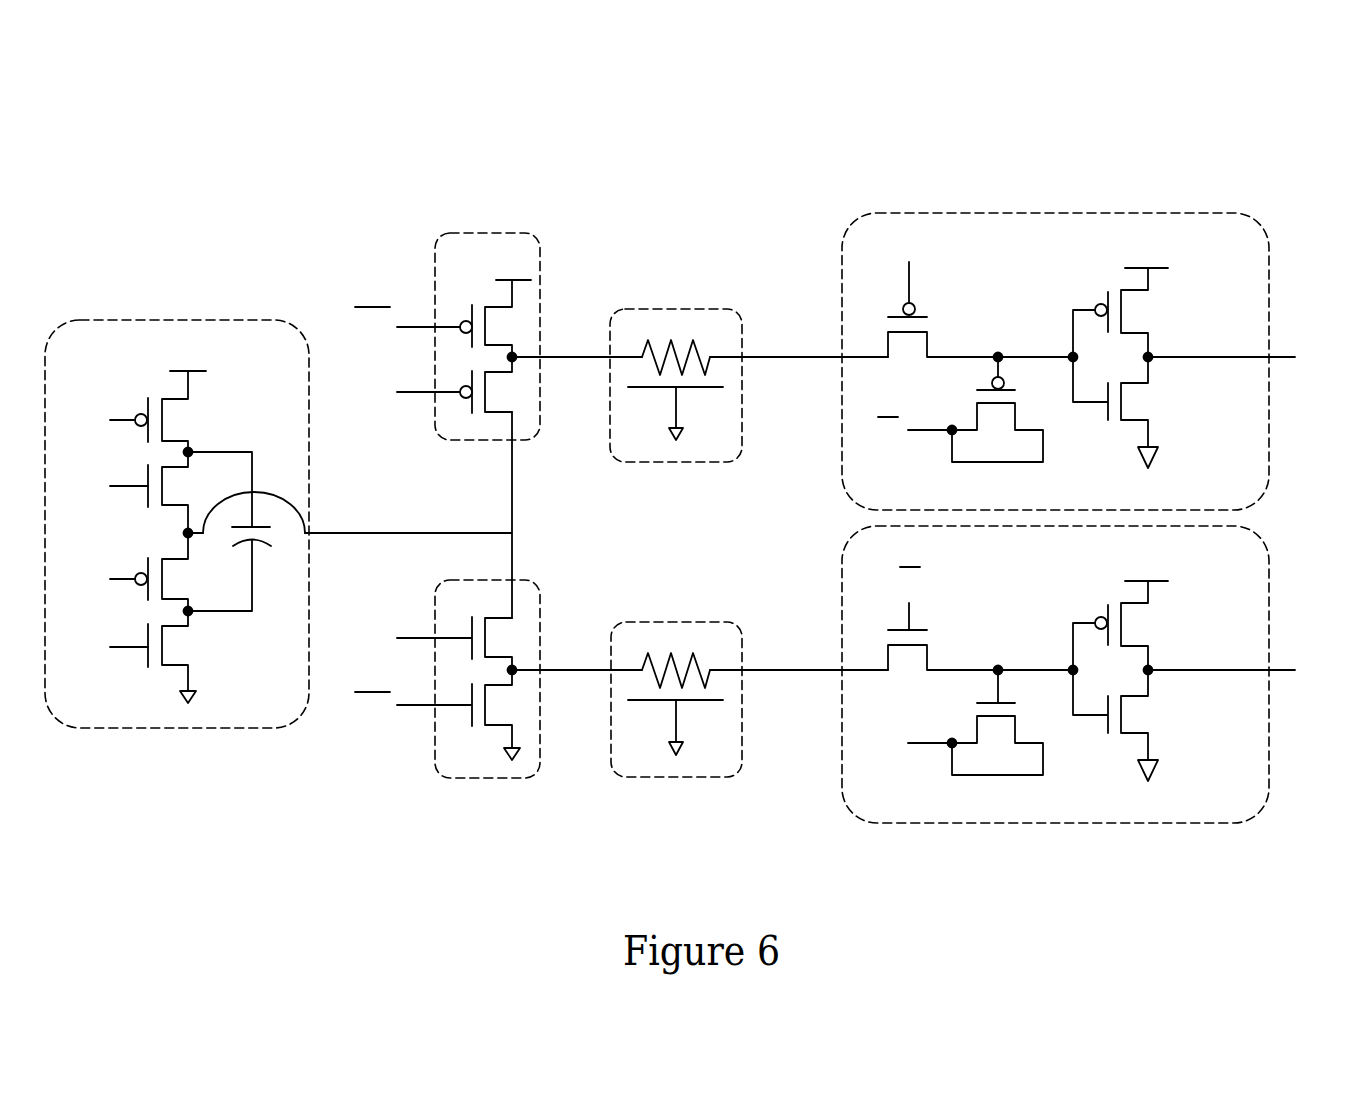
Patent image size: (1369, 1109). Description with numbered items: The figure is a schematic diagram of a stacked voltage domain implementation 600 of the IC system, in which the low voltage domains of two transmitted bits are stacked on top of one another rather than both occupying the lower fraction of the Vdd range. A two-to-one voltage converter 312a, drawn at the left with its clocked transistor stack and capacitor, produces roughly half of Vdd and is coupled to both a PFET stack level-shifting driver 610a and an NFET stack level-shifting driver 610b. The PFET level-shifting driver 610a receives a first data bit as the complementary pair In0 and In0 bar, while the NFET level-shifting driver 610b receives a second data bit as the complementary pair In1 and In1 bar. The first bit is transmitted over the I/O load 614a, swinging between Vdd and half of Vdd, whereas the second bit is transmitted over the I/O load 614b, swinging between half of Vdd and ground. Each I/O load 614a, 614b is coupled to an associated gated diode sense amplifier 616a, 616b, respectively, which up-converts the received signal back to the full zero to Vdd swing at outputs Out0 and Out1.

The stacked voltage domain implementation 600 is at (117, 115).
The voltage converter 312a is at (112, 328).
The PFET stack level-shifting driver 610a is at (443, 287).
The NFET stack level-shifting driver 610b is at (438, 748).
The I/O load 614a is at (632, 464).
The I/O load 614b is at (626, 768).
The gated diode sense amplifier 616a is at (860, 480).
The gated diode sense amplifier 616b is at (855, 785).